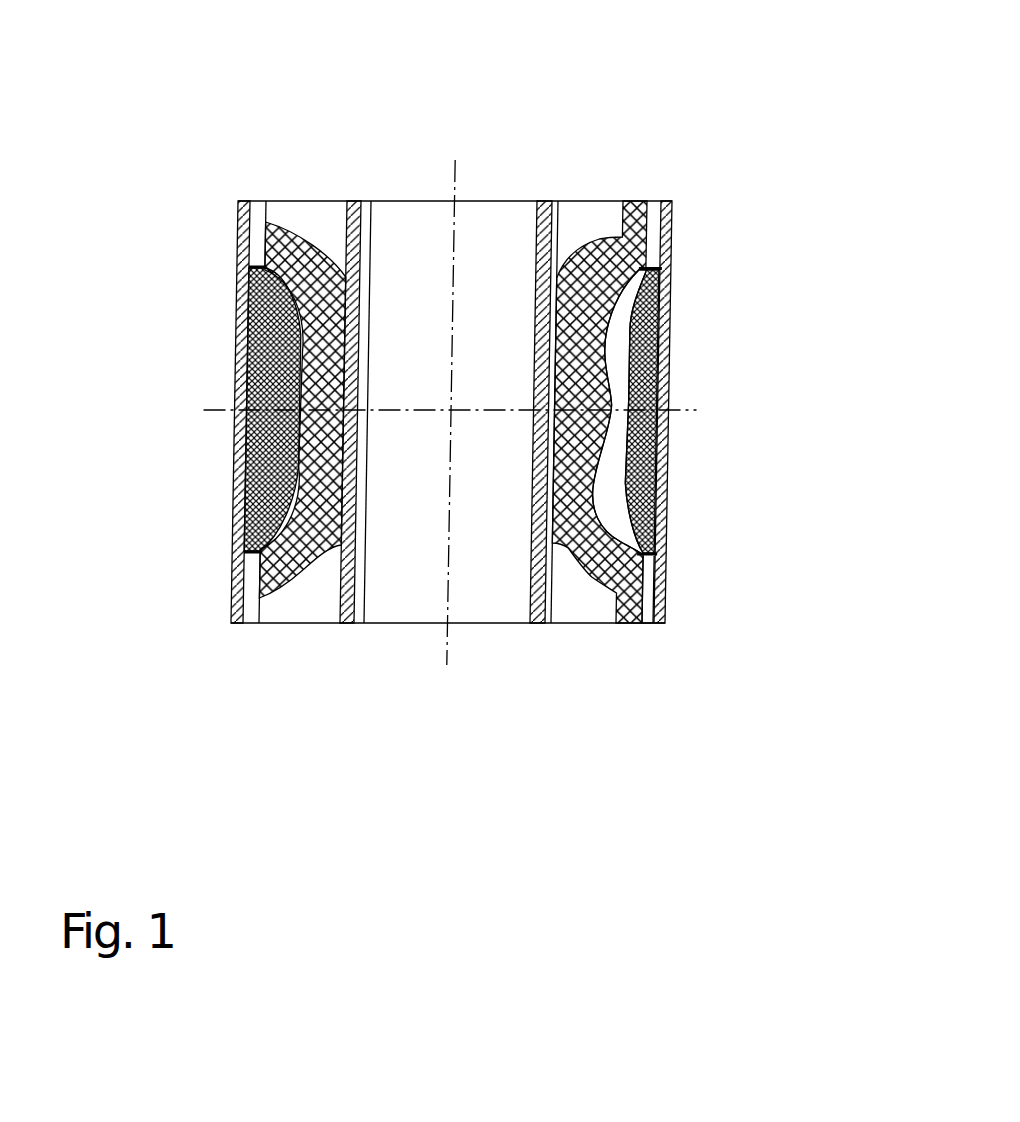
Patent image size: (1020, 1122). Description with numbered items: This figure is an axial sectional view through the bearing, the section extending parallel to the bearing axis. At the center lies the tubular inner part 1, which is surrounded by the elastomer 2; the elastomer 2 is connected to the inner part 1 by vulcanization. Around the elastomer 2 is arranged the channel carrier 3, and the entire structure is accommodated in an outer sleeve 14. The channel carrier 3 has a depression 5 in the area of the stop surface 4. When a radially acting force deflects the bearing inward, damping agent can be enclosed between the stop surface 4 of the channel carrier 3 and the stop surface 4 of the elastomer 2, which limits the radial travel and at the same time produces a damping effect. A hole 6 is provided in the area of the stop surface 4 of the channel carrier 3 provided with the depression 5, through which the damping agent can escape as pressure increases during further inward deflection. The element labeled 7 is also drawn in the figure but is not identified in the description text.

The tubular inner part 1 is at (548, 202).
The elastomer 2 is at (643, 625).
The channel carrier 3 is at (671, 312).
The stop surface 4 is at (605, 470).
The depression 5 is at (663, 363).
The hole 6 is at (245, 408).
The annular slot 7 is at (250, 270).
The outer sleeve 14 is at (663, 557).